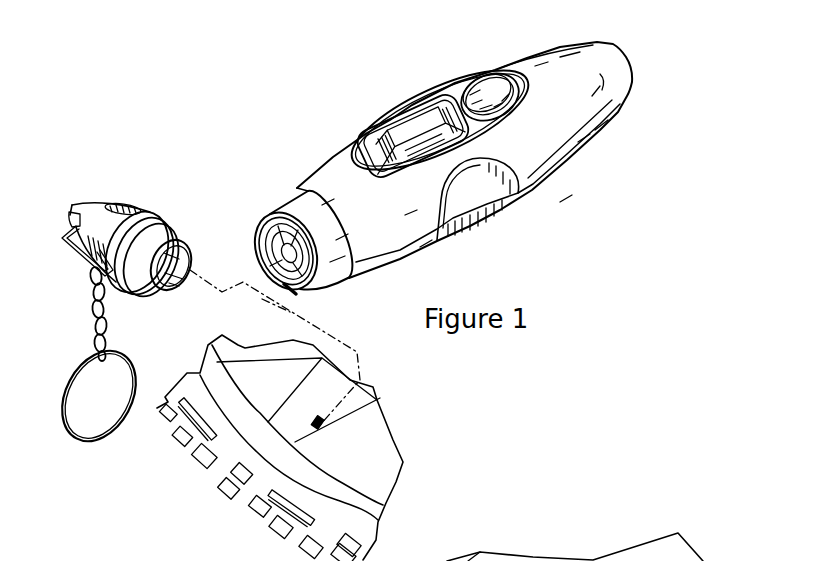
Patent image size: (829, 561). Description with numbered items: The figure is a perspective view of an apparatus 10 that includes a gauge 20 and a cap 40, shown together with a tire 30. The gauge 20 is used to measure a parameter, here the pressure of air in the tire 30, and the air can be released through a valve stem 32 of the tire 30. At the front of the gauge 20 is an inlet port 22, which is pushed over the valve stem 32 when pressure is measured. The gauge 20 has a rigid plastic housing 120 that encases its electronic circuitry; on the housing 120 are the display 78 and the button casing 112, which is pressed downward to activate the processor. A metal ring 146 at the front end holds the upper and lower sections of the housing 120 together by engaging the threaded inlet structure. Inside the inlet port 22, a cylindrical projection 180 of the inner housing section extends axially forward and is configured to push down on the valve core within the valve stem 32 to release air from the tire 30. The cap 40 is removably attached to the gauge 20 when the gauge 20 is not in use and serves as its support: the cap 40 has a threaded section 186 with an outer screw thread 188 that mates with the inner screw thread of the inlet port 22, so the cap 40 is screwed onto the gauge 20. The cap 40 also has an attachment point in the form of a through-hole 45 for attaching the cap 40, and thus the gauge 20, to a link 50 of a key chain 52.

The apparatus 10 is at (622, 146).
The gauge 20 is at (497, 67).
The housing 120 is at (530, 59).
The button casing 112 is at (483, 92).
The display 78 is at (403, 130).
The metal ring 146 is at (288, 207).
The cylindrical projection 180 is at (280, 258).
The inlet port 22 is at (290, 290).
The cap 40 is at (135, 198).
The through-hole 45 is at (76, 216).
The threaded section 186 is at (172, 230).
The outer screw thread 188 is at (181, 240).
The link 50 is at (80, 250).
The key chain 52 is at (75, 372).
The tire 30 is at (215, 478).
The valve stem 32 is at (312, 427).